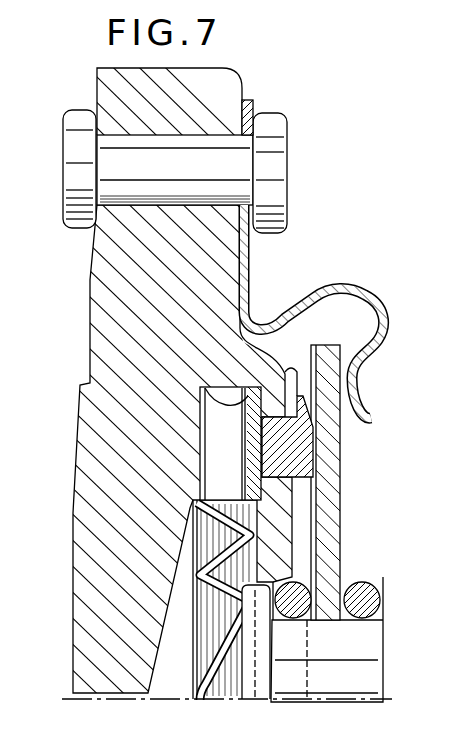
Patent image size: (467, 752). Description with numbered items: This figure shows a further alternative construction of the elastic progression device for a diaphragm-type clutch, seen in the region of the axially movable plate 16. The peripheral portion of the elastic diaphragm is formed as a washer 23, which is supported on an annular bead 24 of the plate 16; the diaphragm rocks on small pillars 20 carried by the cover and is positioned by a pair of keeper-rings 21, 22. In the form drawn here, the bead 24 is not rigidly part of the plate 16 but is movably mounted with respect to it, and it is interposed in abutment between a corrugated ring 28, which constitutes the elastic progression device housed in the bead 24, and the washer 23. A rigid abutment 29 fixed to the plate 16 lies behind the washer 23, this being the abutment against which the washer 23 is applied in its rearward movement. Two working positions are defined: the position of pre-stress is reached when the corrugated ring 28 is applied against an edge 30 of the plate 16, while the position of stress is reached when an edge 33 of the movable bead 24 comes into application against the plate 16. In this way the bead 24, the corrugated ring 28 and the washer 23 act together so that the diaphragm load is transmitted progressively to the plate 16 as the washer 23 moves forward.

The second plate 16 is at (102, 277).
The small pillars 20 is at (371, 658).
The keeper-ring 21 is at (290, 582).
The keeper-ring 22 is at (371, 585).
The peripheral portion (washer) 23 is at (343, 521).
The annular bead 24 is at (296, 463).
The corrugated ring 28 is at (207, 613).
The rigid abutment 29 is at (366, 402).
The edge 30 is at (208, 380).
The edge 33 is at (292, 393).